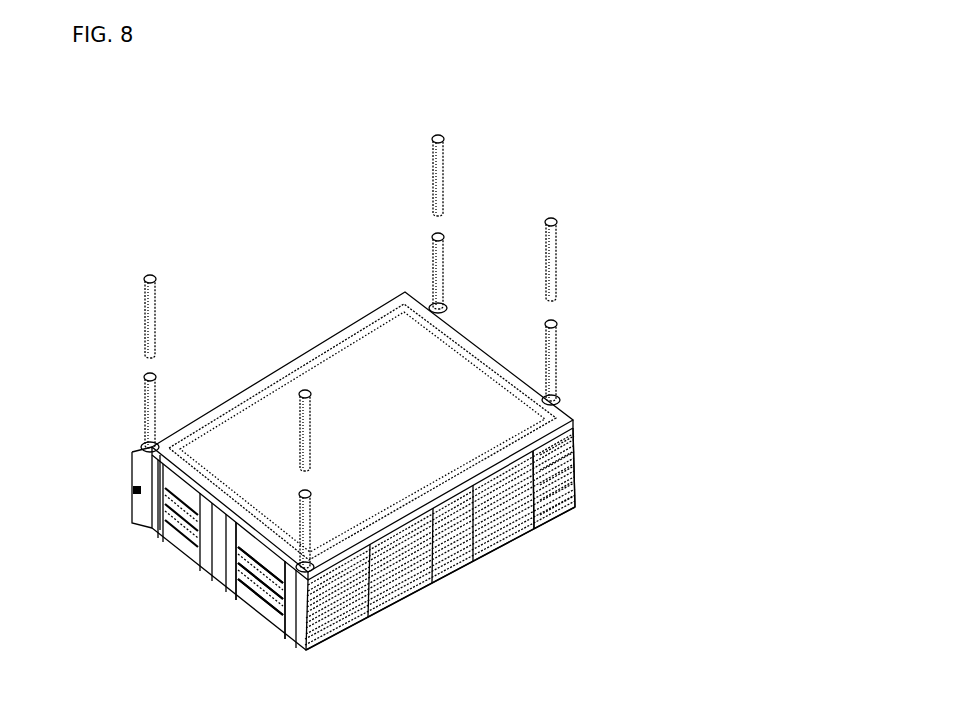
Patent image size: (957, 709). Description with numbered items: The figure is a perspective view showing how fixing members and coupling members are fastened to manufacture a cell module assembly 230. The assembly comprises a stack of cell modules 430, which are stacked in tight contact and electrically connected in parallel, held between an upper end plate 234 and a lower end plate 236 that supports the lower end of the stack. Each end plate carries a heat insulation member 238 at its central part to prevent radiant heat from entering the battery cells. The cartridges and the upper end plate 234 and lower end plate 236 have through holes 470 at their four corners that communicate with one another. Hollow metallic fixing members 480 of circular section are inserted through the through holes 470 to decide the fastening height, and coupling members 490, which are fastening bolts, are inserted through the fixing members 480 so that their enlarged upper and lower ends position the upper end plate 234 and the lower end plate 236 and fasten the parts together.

The cell module assembly 230 is at (106, 164).
The upper end plate 234 is at (311, 342).
The lower end plate 236 is at (465, 565).
The heat insulation member 238 is at (448, 439).
The cell modules 430 is at (570, 456).
The through holes 470 is at (263, 587).
The fixing members 480 is at (571, 363).
The coupling members 490 is at (572, 232).